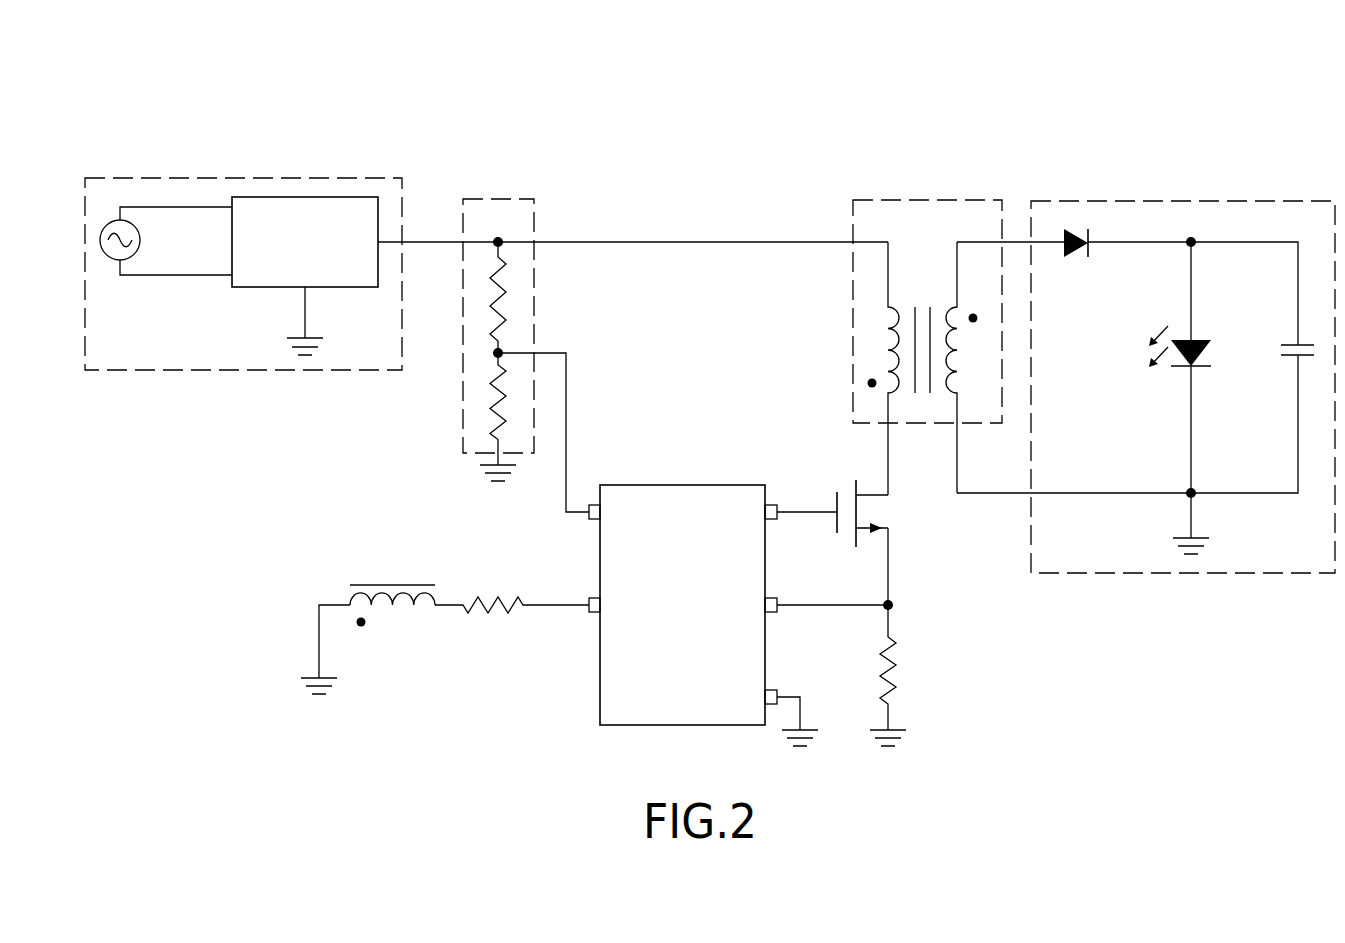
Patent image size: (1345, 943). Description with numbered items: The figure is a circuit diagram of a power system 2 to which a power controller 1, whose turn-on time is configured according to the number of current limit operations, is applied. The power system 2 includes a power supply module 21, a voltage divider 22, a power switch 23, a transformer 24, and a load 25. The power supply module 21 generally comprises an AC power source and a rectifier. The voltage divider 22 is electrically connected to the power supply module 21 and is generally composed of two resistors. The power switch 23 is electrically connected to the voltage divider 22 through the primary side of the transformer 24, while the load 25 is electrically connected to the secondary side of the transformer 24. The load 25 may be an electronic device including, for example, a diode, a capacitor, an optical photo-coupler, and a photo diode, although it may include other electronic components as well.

The power system 2 is at (1283, 115).
The power supply module 21 is at (240, 178).
The voltage divider 22 is at (517, 199).
The transformer 24 is at (924, 200).
The load 25 is at (1152, 201).
The power controller 1 is at (703, 485).
The power switch 23 is at (905, 517).